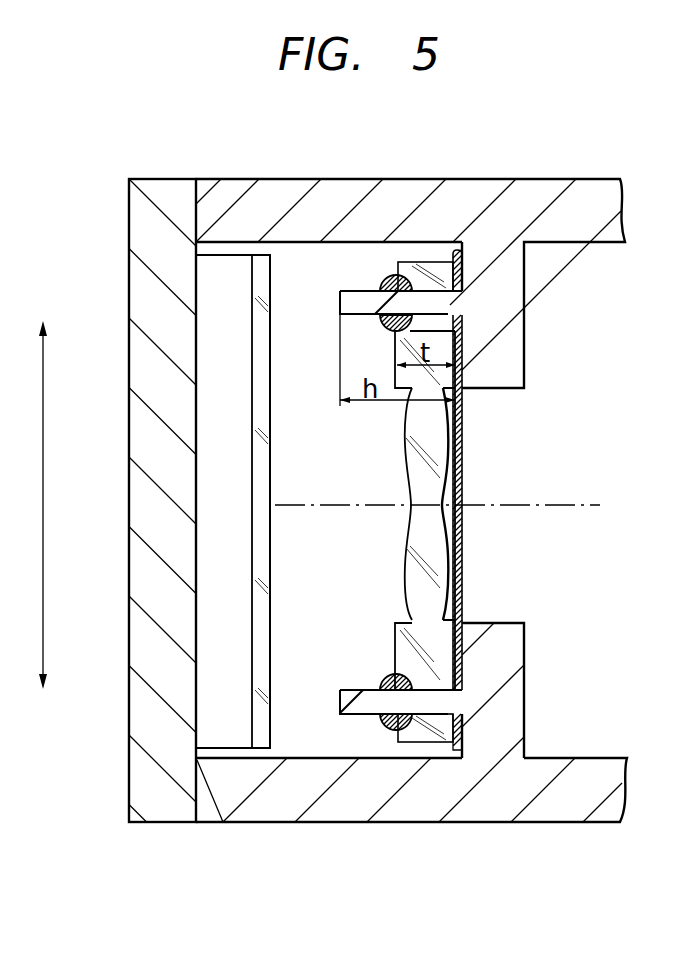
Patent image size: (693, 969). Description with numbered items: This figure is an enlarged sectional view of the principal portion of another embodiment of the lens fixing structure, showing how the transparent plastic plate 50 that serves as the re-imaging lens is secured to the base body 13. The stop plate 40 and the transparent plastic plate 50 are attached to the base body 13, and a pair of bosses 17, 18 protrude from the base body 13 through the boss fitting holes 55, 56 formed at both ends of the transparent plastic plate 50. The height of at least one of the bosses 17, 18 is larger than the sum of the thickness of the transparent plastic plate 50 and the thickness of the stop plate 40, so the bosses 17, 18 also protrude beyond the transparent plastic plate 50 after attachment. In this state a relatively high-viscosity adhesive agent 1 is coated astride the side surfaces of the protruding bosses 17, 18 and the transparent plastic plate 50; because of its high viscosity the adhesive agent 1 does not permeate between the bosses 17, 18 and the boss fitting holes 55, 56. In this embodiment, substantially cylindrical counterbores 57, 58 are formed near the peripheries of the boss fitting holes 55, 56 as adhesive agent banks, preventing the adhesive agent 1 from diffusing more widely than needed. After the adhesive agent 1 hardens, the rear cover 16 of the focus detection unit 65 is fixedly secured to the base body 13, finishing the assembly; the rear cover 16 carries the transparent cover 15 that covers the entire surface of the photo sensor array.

The adhesive agent 1 is at (392, 278).
The base body 13 is at (507, 334).
The transparent cover 15 is at (263, 746).
The rear cover 16 is at (140, 221).
The boss 17 is at (346, 291).
The boss 18 is at (346, 690).
The stop plate 40 is at (463, 495).
The transparent plastic plate 50 is at (456, 252).
The boss fitting hole 55 is at (427, 262).
The boss fitting hole 56 is at (428, 742).
The counterbore 57 is at (408, 268).
The counterbore 58 is at (401, 742).
The focus detection unit 65 is at (207, 697).